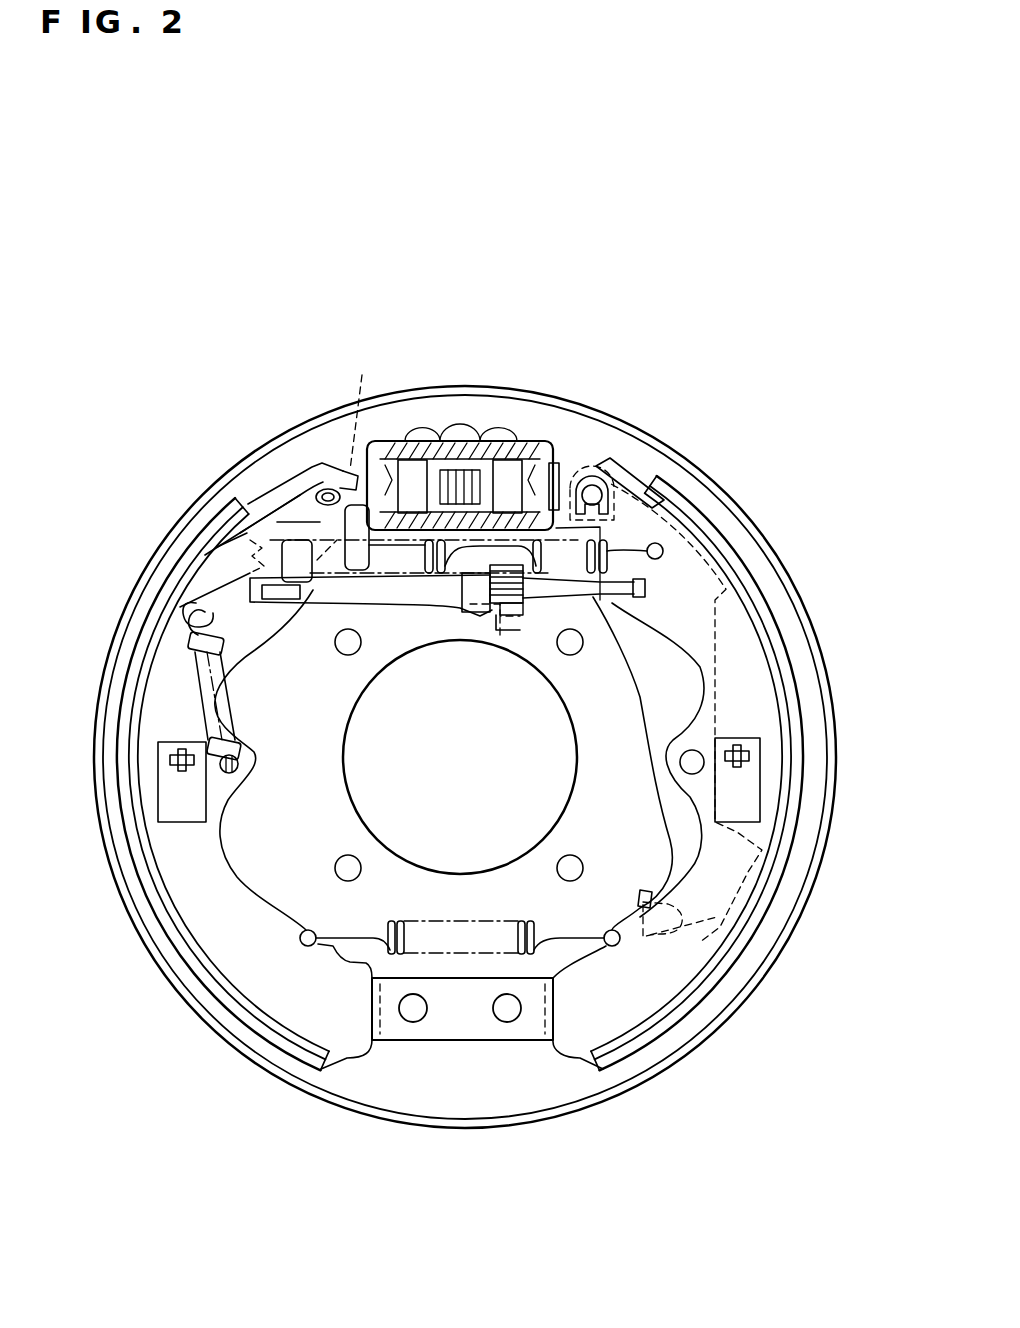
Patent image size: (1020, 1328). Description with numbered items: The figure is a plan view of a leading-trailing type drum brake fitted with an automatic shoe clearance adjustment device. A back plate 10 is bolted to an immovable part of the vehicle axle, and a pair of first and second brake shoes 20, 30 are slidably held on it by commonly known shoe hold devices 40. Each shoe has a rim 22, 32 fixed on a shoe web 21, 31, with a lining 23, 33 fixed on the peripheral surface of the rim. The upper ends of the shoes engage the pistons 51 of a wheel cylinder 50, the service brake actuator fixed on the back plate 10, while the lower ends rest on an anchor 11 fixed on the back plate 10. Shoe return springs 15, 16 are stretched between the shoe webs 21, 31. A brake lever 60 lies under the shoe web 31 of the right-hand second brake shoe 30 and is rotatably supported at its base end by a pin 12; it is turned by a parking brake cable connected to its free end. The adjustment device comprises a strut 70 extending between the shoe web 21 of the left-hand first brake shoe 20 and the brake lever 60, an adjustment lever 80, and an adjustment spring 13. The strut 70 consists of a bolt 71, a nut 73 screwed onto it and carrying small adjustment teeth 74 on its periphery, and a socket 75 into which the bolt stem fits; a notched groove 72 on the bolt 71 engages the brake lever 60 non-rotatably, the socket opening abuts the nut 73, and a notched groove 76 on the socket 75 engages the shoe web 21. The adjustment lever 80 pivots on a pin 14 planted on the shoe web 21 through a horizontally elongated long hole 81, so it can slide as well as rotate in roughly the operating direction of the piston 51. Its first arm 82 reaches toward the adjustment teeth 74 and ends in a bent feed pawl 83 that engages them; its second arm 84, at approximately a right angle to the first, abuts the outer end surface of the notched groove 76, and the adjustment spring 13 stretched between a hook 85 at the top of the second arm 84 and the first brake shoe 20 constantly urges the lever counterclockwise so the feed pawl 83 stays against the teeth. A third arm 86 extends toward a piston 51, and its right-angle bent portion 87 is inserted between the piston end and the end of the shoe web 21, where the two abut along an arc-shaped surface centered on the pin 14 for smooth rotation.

The back plate 10 is at (803, 650).
The anchor 11 is at (463, 1032).
The pin 12 is at (613, 473).
The adjustment spring 13 is at (188, 640).
The pin 14 is at (330, 468).
The shoe return spring 15 is at (650, 492).
The shoe return spring 16 is at (395, 937).
The first brake shoe 20 is at (210, 780).
The shoe web 21 is at (203, 925).
The rim 22 is at (212, 965).
The lining 23 is at (245, 1015).
The second brake shoe 30 is at (717, 777).
The shoe web 31 is at (720, 927).
The rim 32 is at (747, 988).
The lining 33 is at (697, 997).
The shoe hold device 40 is at (158, 801).
The wheel cylinder 50 is at (463, 426).
The piston 51 is at (412, 460).
The brake lever 60 is at (675, 813).
The strut 70 is at (463, 652).
The bolt 71 is at (536, 608).
The notched groove 72 is at (634, 598).
The nut 73 is at (523, 633).
The adjustment teeth 74 is at (521, 616).
The socket 75 is at (474, 592).
The notched groove 76 is at (262, 597).
The adjustment lever 80 is at (373, 476).
The long hole 81 is at (316, 490).
The first arm 82 is at (410, 604).
The feed pawl 83 is at (500, 614).
The second arm 84 is at (248, 523).
The hook 85 is at (197, 593).
The third arm 86 is at (343, 473).
The bent portion 87 is at (314, 455).